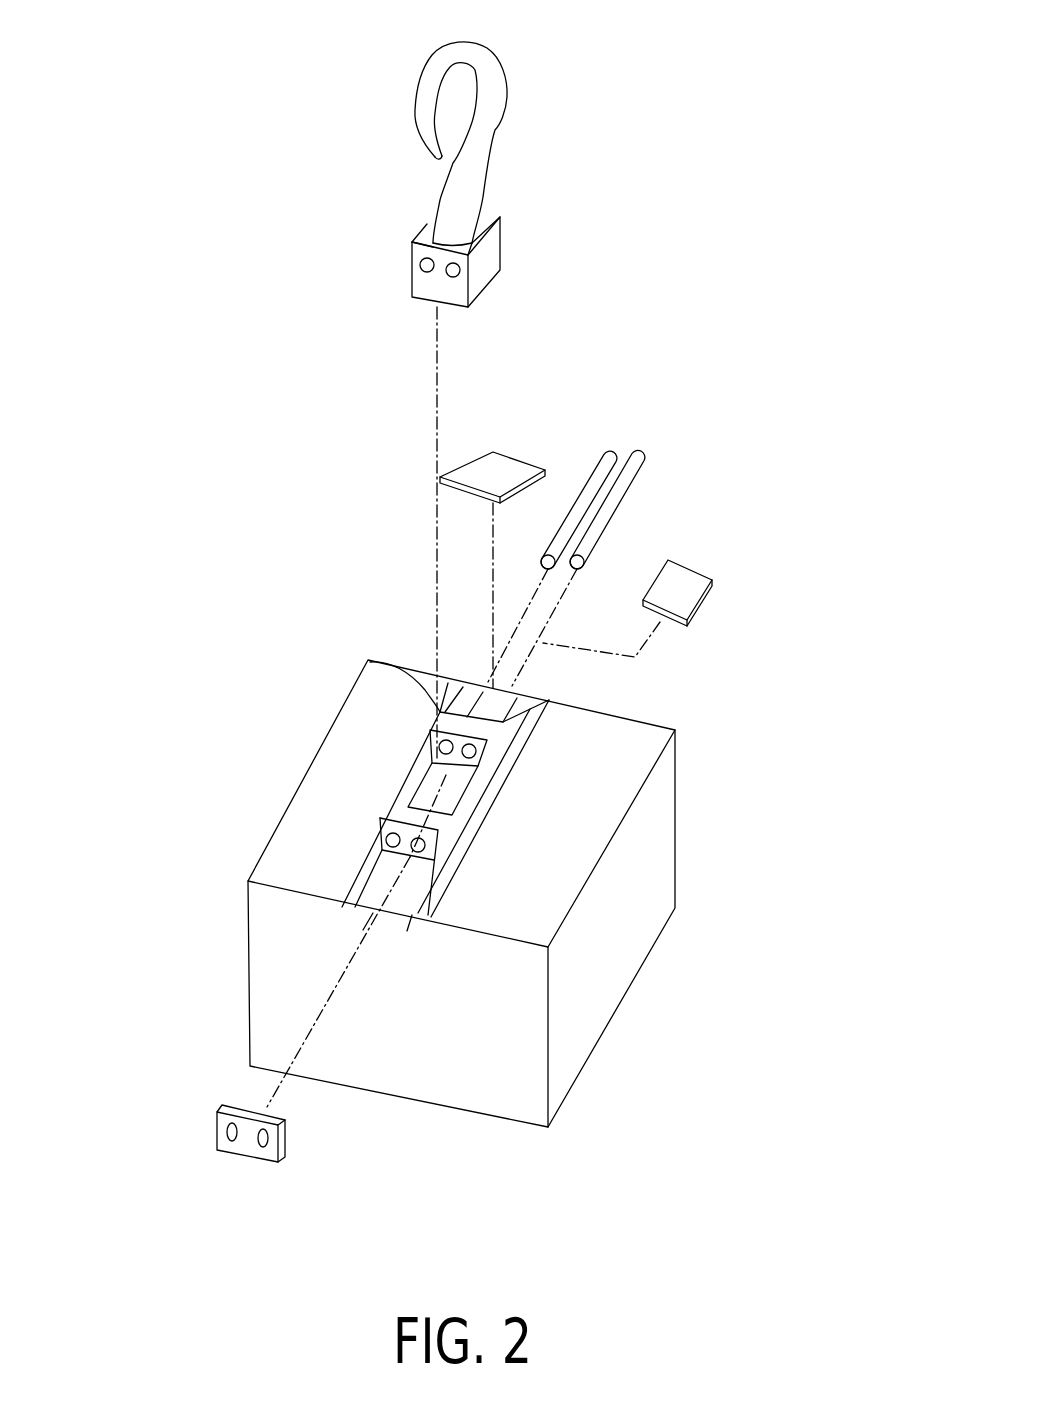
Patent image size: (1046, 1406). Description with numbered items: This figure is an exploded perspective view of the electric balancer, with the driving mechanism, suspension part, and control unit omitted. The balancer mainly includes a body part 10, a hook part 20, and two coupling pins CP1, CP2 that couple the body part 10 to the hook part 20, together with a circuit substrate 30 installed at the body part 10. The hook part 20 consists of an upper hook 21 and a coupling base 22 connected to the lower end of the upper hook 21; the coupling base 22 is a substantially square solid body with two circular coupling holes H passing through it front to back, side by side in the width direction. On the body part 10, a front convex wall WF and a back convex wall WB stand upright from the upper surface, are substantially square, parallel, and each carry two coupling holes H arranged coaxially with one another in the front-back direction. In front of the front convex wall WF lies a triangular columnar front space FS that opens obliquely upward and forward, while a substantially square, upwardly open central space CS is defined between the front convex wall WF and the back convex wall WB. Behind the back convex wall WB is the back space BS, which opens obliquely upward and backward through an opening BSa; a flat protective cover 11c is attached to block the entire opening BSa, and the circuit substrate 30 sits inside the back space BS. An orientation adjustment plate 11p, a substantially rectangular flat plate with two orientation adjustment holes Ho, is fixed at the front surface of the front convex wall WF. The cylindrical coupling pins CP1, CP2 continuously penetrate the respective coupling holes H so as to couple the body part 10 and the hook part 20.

The hook part 20 is at (536, 80).
The upper hook 21 is at (497, 133).
The coupling base 22 is at (485, 257).
The coupling hole H is at (420, 263).
The protective cover 11c is at (500, 472).
The coupling pin CP1 is at (612, 450).
The coupling pin CP2 is at (643, 453).
The circuit substrate 30 is at (712, 582).
The body part 10 is at (607, 970).
The back convex wall WB is at (438, 705).
The front convex wall WF is at (392, 807).
The back space BS is at (631, 693).
The opening BSa is at (540, 680).
The central space CS is at (498, 751).
The front space FS is at (412, 886).
The orientation adjustment plate 11p is at (278, 1160).
The orientation adjustment hole Ho is at (216, 1136).